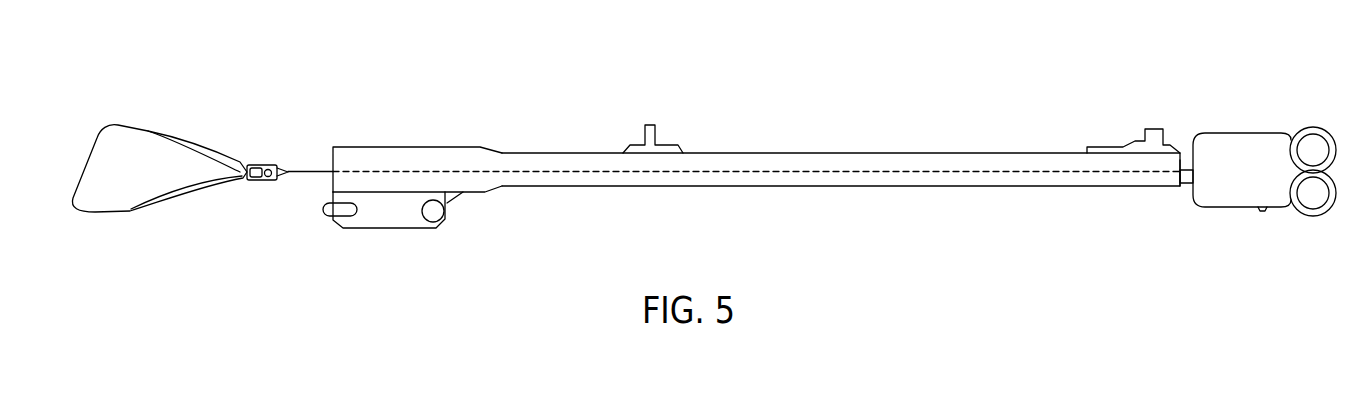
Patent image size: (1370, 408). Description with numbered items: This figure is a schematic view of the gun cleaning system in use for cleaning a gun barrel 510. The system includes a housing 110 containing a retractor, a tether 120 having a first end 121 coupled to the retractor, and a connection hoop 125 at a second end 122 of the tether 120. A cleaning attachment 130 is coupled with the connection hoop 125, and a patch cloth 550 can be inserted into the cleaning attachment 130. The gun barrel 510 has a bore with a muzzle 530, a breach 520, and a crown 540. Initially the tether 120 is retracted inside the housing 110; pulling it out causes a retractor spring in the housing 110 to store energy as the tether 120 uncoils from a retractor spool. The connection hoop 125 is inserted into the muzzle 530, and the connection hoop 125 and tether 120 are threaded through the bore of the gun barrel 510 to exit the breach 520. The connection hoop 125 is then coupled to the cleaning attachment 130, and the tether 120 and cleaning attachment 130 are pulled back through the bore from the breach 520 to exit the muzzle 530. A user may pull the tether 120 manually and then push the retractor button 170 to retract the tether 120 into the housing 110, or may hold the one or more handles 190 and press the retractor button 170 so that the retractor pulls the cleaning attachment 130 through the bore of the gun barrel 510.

The housing 110 is at (1237, 145).
The tether 120 is at (898, 171).
The first end 121 is at (1186, 184).
The second end 122 is at (314, 170).
The connection hoop 125 is at (281, 169).
The cleaning attachment 130 is at (263, 181).
The retractor button 170 is at (1262, 211).
The handles 190 is at (1310, 128).
The gun barrel 510 is at (486, 178).
The breach 520 is at (337, 186).
The muzzle 530 is at (1176, 182).
The crown 540 is at (1182, 153).
The patch cloth 550 is at (113, 192).